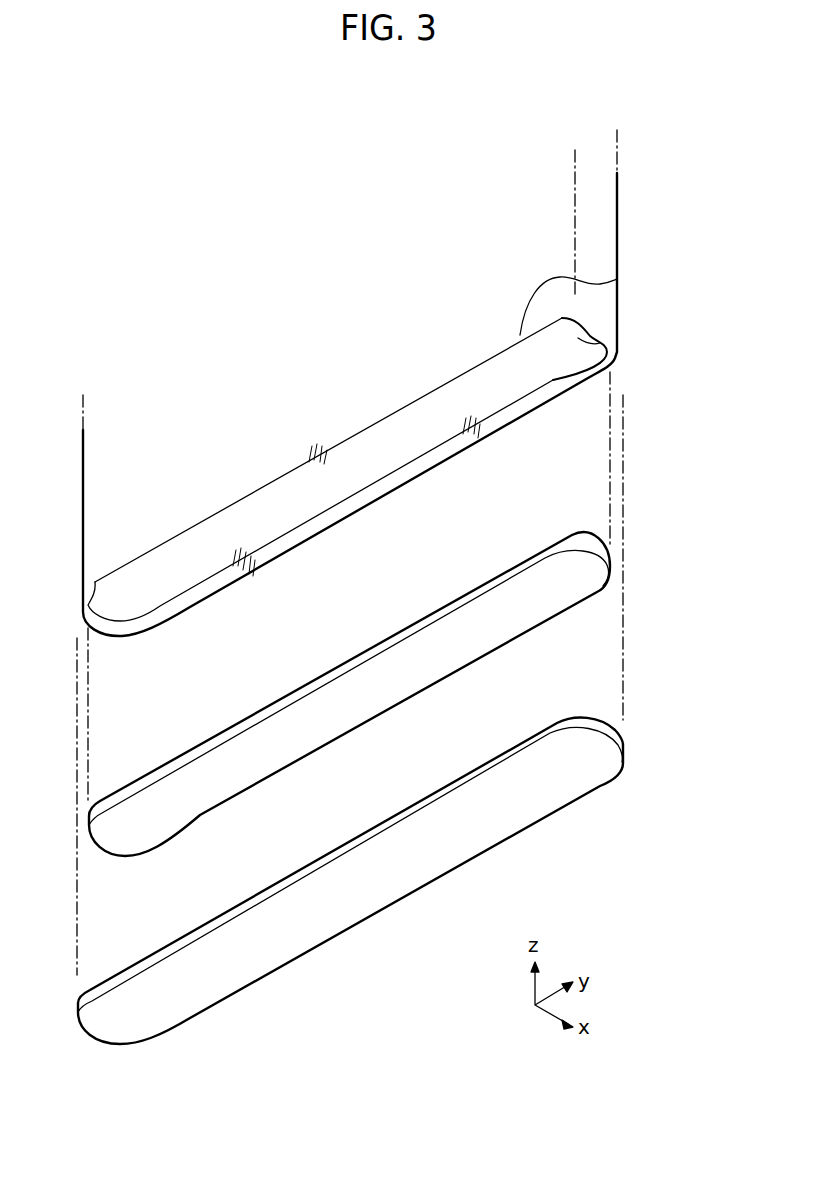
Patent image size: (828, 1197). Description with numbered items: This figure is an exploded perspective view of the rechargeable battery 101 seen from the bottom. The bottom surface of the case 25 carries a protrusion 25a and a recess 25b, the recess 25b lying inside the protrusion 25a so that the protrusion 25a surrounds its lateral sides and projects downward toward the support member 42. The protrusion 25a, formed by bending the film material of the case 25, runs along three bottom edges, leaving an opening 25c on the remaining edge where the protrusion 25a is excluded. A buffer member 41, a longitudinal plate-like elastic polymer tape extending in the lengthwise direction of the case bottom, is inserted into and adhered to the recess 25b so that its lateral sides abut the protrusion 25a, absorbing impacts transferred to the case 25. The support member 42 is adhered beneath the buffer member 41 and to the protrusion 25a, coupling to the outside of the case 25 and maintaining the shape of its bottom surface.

The rechargeable battery 101 is at (412, 162).
The case 25 is at (393, 552).
The protrusion 25a is at (562, 388).
The recess 25b is at (607, 345).
The opening 25c is at (620, 282).
The buffer member 41 is at (597, 577).
The support member 42 is at (597, 783).